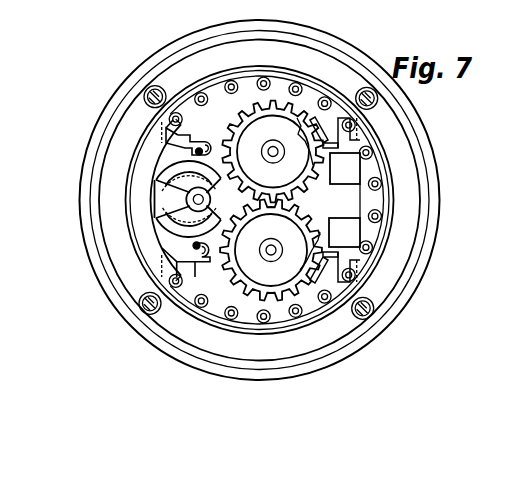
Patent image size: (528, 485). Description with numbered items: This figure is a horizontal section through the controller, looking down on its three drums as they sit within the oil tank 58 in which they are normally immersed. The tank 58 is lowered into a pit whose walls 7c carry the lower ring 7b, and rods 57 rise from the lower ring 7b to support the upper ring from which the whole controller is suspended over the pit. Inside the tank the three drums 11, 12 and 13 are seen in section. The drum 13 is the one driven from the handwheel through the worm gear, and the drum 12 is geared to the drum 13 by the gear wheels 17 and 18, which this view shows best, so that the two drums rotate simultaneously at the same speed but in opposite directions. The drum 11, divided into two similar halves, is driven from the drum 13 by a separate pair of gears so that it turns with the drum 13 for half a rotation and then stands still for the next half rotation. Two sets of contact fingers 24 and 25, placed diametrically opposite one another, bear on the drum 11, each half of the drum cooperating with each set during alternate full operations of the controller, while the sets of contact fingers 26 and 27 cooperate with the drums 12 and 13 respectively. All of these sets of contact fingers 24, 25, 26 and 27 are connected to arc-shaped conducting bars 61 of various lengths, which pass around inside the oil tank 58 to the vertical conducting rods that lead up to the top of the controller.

The lower ring 7b is at (410, 162).
The pit walls 7c is at (401, 298).
The oil tank 58 is at (394, 214).
The arc-shaped conducting bars 61 is at (139, 192).
The rods 57 is at (379, 98).
The gear wheel 18 is at (272, 152).
The gear wheel 17 is at (314, 211).
The drum 11 is at (185, 214).
The contact fingers 24 is at (191, 136).
The contact fingers 25 is at (190, 262).
The drum 12 is at (303, 122).
The contact fingers 26 is at (328, 141).
The contact fingers 27 is at (330, 257).
The drum 13 is at (368, 205).